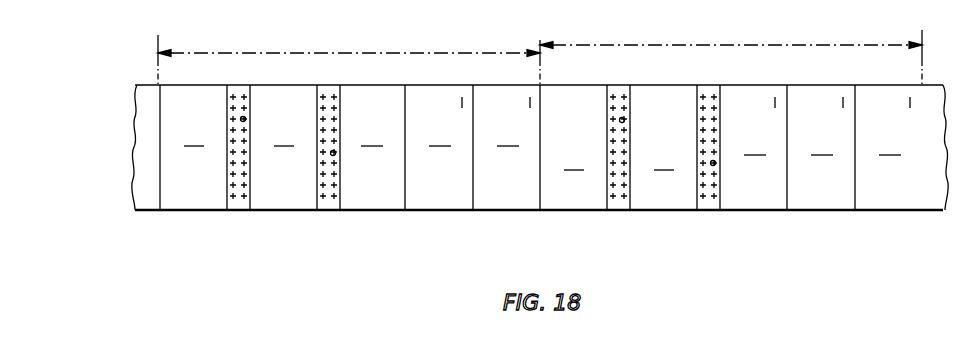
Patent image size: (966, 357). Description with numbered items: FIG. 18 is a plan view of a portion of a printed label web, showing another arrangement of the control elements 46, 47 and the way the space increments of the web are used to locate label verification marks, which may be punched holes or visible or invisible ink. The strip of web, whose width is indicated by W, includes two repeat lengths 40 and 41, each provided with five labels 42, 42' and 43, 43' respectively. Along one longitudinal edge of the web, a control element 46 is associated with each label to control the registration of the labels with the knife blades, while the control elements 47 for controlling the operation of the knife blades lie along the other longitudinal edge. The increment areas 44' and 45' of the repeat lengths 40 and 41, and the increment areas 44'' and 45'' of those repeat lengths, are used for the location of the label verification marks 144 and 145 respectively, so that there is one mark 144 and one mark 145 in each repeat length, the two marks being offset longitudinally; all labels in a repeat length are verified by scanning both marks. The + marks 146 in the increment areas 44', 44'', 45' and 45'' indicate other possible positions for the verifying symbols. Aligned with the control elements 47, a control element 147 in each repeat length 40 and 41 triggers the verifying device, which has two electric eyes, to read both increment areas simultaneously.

The repeat length 40 is at (437, 54).
The repeat length 41 is at (768, 46).
The weft direction / width W is at (856, 80).
The label 42 is at (227, 147).
The label 42' is at (450, 147).
The label 43 is at (619, 162).
The label 43' is at (823, 147).
The increment area 44' is at (232, 139).
The increment area 44'' is at (337, 139).
The increment area 45' is at (626, 139).
The increment area 45'' is at (723, 138).
The control element 46 is at (215, 105).
The control element 47 is at (203, 190).
The label verification mark 144 is at (246, 119).
The label verification mark 145 is at (336, 153).
The + mark 146 is at (244, 200).
The control element 147 is at (214, 190).